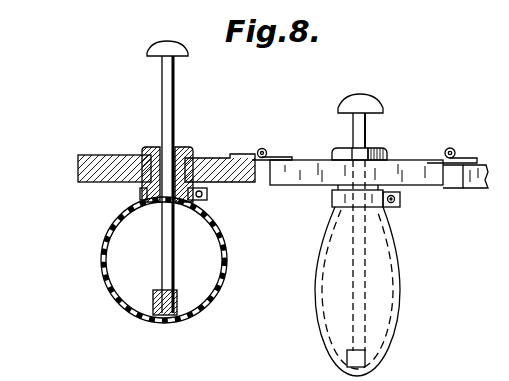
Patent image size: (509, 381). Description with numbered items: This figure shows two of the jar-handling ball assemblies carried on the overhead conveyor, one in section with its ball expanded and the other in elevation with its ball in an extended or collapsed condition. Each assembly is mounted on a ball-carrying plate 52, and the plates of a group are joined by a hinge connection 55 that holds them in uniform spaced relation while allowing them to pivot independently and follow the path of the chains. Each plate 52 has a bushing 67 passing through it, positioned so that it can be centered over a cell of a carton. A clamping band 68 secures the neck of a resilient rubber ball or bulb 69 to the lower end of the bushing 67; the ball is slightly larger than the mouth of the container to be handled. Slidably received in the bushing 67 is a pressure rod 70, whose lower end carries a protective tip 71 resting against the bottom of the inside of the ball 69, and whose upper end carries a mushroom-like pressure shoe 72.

The plate 52 is at (78, 169).
The hinge connection 55 is at (272, 150).
The bushing 67 is at (147, 148).
The clamping band 68 is at (207, 195).
The rubber ball or bulb 69 is at (105, 300).
The pressure rod 70 is at (162, 100).
The protective tip 71 is at (178, 308).
The pressure shoe 72 is at (147, 48).